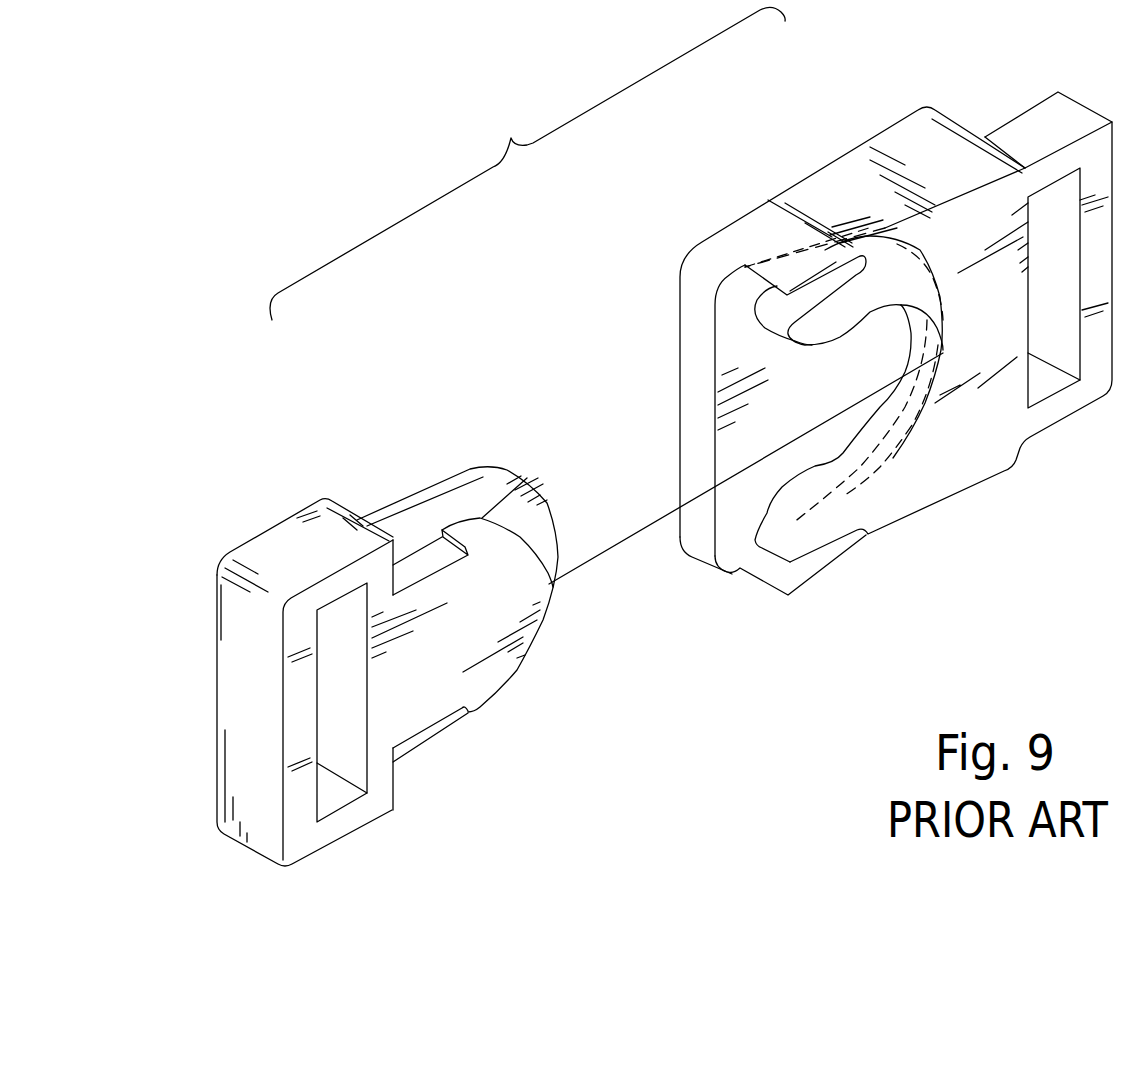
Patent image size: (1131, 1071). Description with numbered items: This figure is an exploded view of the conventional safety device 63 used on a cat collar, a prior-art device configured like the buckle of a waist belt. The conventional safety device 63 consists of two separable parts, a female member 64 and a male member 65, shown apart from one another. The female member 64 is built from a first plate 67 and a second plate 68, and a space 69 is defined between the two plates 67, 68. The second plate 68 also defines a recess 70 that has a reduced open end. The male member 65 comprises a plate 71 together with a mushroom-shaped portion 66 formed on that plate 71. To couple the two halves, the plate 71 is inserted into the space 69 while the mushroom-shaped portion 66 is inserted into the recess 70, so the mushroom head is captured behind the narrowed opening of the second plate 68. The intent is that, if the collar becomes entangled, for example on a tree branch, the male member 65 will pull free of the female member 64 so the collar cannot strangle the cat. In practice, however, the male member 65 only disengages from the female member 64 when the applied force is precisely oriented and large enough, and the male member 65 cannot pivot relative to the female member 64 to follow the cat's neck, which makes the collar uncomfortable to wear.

The conventional safety device 63 is at (527, 163).
The female member 64 is at (882, 358).
The male member 65 is at (352, 482).
The mushroom-shaped portion 66 is at (457, 556).
The first plate 67 is at (702, 273).
The second plate 68 is at (894, 522).
The space 69 is at (732, 517).
The recess 70 is at (870, 370).
The plate 71 is at (431, 603).